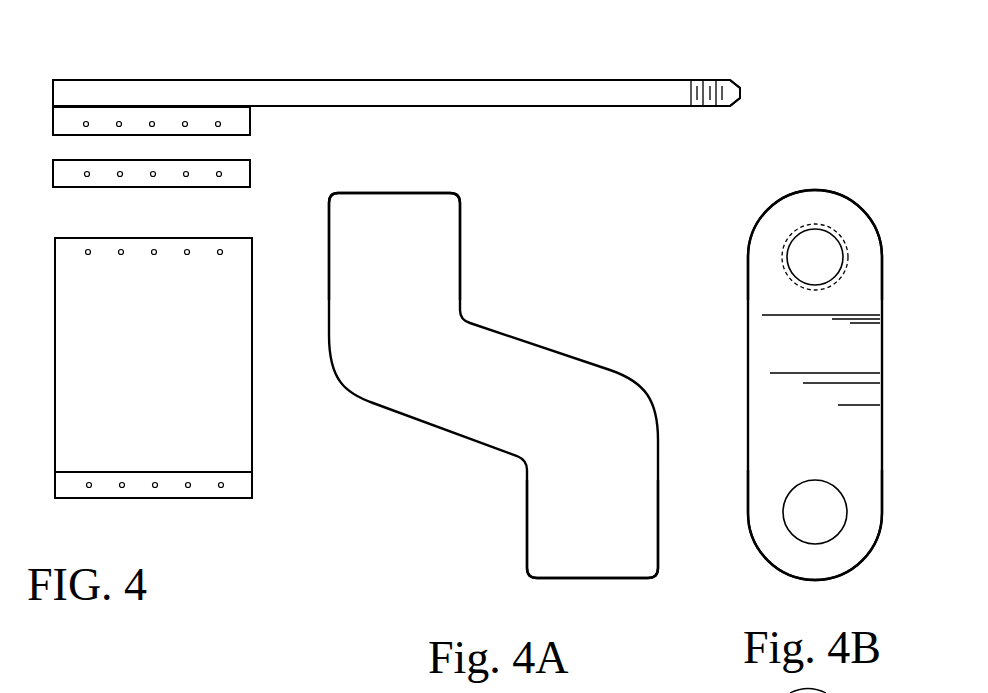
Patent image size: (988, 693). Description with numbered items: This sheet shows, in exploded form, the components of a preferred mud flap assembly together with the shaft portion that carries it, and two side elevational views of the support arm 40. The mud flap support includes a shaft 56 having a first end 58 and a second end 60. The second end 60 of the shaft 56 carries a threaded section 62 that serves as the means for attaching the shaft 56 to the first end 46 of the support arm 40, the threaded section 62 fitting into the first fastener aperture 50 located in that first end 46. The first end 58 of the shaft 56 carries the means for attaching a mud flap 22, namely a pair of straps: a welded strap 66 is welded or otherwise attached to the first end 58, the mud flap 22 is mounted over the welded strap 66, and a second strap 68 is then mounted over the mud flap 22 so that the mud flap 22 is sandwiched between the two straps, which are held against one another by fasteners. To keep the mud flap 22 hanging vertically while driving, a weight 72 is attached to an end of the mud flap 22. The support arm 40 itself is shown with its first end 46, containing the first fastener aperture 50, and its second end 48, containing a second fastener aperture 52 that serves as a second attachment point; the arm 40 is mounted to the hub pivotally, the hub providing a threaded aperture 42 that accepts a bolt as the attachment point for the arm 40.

In FIG. 4, the mud flap 22 is at (127, 364).
In FIG. 4A, the support arm 40 is at (484, 395).
In FIG. 4B, the support arm 40 is at (809, 445).
In FIG. 4B, the threaded aperture 42 is at (792, 689).
In FIG. 4A, the first end 46 is at (407, 247).
In FIG. 4B, the first end 46 is at (748, 255).
In FIG. 4A, the second end 48 is at (604, 555).
In FIG. 4B, the second end 48 is at (805, 580).
In FIG. 4B, the first fastener aperture 50 is at (845, 247).
In FIG. 4B, the second fastener aperture 52 is at (840, 537).
In FIG. 4, the shaft 56 is at (288, 80).
In FIG. 4, the first end 58 is at (78, 83).
In FIG. 4, the second end 60 is at (675, 80).
In FIG. 4, the threaded section 62 is at (712, 107).
In FIG. 4, the welded strap 66 is at (54, 123).
In FIG. 4, the second strap 68 is at (108, 188).
In FIG. 4, the weight 72 is at (238, 499).